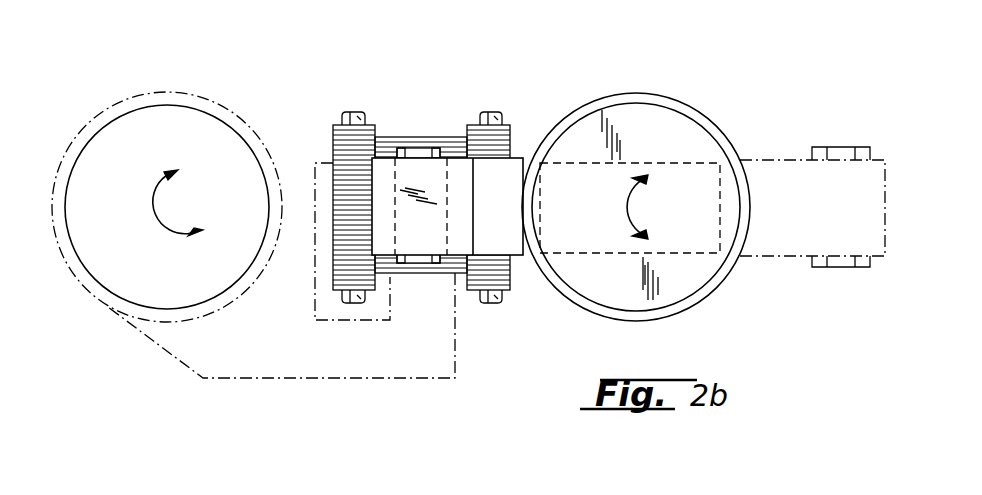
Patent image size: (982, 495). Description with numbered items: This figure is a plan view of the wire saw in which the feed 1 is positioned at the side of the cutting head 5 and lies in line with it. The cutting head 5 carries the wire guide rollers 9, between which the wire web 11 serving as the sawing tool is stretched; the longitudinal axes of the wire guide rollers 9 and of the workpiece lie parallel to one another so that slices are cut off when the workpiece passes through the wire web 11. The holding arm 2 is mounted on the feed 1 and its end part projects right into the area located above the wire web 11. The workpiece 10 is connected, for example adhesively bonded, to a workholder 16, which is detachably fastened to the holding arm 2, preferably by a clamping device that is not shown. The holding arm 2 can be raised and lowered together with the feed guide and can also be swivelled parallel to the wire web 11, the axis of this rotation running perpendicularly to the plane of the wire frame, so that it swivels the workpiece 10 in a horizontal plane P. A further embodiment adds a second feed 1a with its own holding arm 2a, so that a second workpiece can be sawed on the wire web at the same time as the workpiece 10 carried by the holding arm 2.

The feed 1 is at (678, 173).
The second feed 1a is at (148, 140).
The holding arm 2 is at (492, 170).
The holding arm 2a is at (267, 365).
The cutting head 5 is at (328, 140).
The wire guide rollers 9 is at (342, 125).
The workpiece 10 is at (400, 155).
The wire web 11 is at (453, 150).
The workholder 16 is at (428, 155).
The horizontal plane P is at (643, 170).